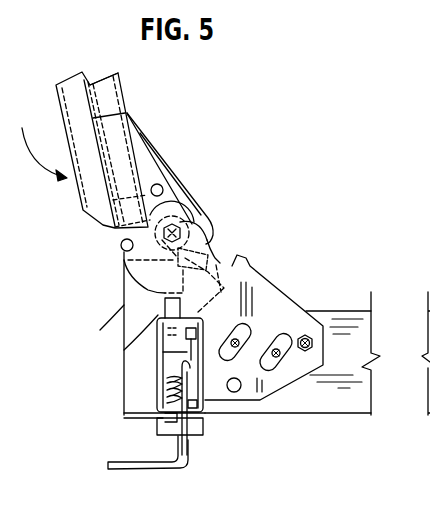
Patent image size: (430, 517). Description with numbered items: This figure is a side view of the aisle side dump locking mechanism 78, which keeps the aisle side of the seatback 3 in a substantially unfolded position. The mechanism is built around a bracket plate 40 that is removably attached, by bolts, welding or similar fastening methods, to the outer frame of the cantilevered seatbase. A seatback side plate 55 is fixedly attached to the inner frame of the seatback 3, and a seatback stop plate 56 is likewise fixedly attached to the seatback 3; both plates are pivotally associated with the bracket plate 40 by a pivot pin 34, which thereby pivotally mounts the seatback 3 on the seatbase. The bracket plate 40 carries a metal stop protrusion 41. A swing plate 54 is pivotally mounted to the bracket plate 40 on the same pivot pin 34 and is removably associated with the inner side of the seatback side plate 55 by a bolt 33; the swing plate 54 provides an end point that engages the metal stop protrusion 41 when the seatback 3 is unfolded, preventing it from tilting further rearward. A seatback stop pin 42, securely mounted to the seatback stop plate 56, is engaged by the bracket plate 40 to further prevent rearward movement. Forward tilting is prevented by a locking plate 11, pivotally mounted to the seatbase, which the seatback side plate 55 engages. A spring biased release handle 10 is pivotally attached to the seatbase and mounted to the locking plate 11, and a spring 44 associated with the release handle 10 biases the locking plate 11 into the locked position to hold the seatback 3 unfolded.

The seatback 3 is at (57, 103).
The aisle side dump locking mechanism 78 is at (103, 64).
The seatback side plate 55 is at (192, 172).
The seatback stop plate 56 is at (179, 172).
The pivot pin 34 is at (181, 230).
The seatback stop pin 42 is at (122, 248).
The locking plate 11 is at (124, 350).
The swing plate 54 is at (182, 273).
The bolt 33 is at (200, 255).
The metal stop protrusion 41 is at (250, 259).
The bracket plate 40 is at (160, 376).
The spring 44 is at (152, 387).
The spring biased release handle 10 is at (112, 470).